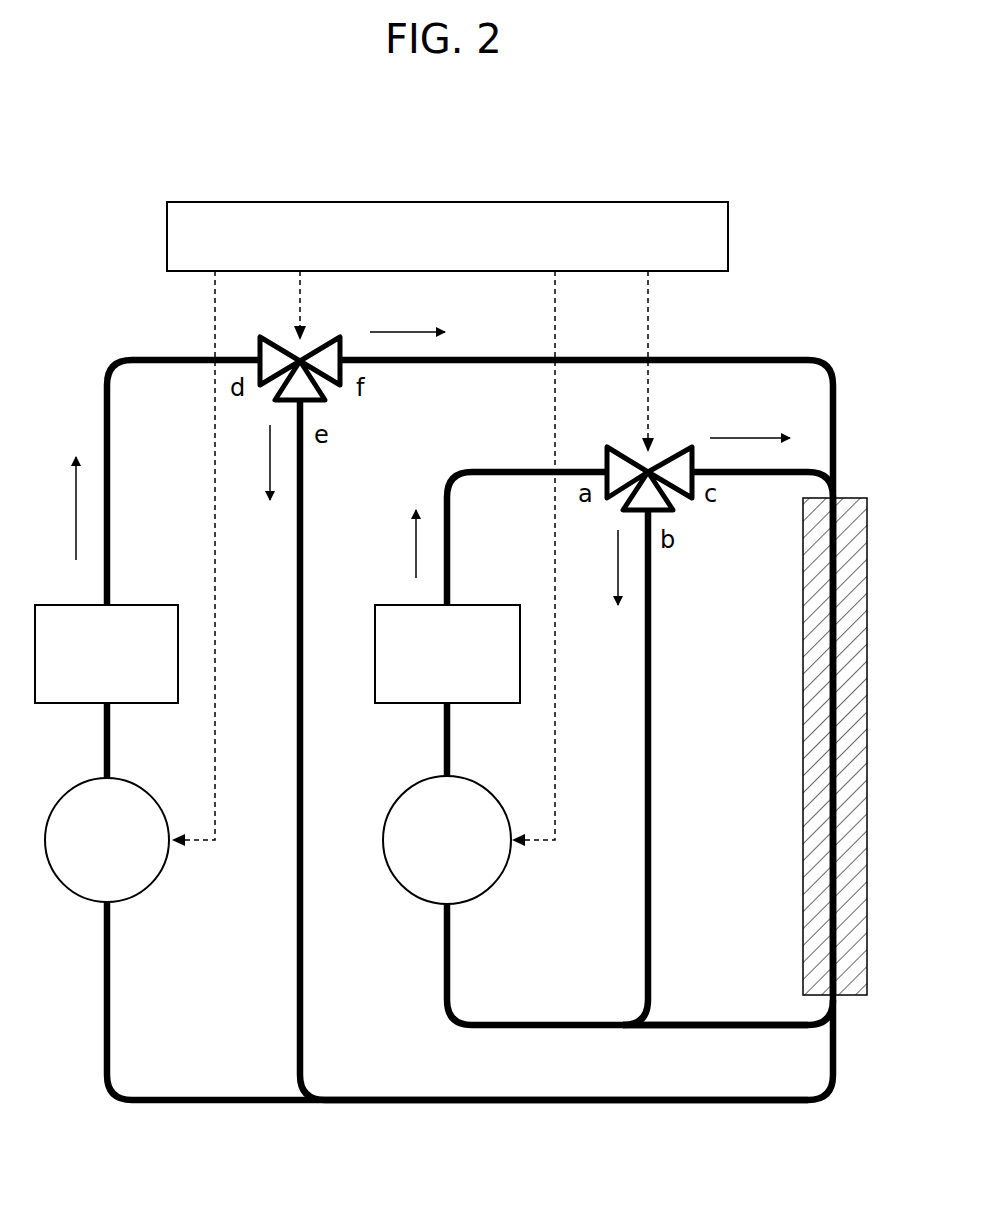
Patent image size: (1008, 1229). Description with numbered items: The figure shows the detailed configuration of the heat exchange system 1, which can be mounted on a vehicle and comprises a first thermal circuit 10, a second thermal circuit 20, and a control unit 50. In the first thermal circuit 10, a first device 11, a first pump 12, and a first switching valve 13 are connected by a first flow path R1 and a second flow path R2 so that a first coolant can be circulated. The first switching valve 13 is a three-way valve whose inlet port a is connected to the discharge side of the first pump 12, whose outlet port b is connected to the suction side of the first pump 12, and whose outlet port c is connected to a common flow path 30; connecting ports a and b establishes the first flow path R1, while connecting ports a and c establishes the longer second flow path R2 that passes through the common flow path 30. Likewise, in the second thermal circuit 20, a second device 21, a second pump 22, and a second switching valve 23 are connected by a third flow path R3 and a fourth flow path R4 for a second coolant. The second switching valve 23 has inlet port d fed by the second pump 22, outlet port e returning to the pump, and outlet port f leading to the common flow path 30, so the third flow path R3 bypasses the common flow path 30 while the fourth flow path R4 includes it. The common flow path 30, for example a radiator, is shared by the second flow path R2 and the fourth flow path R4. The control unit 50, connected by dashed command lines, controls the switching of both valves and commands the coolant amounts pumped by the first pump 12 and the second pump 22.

The heat exchange system 1 is at (172, 139).
The first thermal circuit 10 is at (484, 464).
The first device 11 is at (482, 604).
The first pump 12 is at (482, 782).
The first switching valve 13 is at (672, 446).
The second thermal circuit 20 is at (152, 352).
The second device 21 is at (142, 604).
The second pump 22 is at (140, 782).
The second switching valve 23 is at (320, 348).
The common flow path 30 is at (843, 497).
The control unit 50 is at (667, 202).
The first flow path R1 is at (652, 944).
The second flow path R2 is at (710, 1022).
The third flow path R3 is at (302, 1022).
The fourth flow path R4 is at (364, 1098).